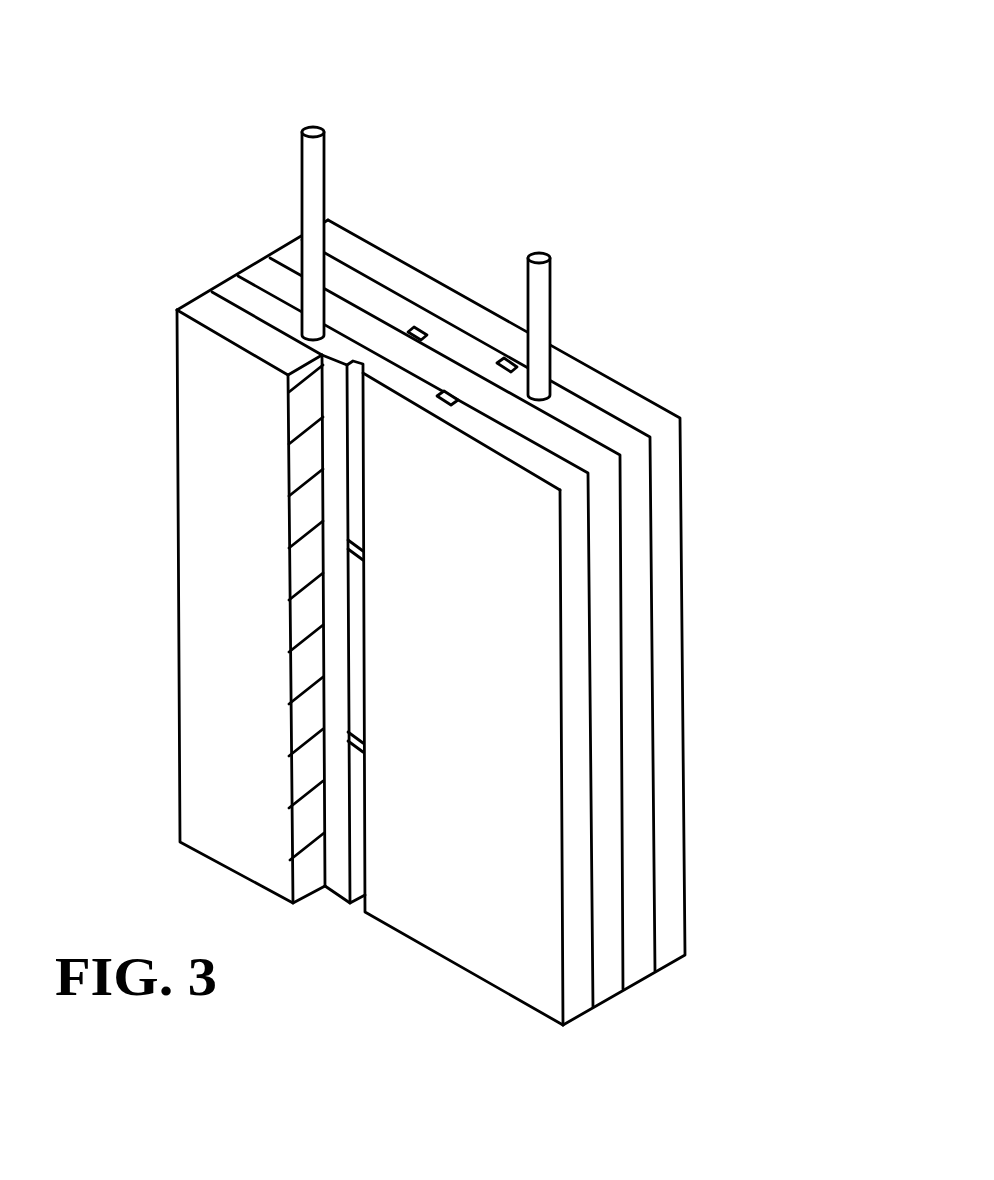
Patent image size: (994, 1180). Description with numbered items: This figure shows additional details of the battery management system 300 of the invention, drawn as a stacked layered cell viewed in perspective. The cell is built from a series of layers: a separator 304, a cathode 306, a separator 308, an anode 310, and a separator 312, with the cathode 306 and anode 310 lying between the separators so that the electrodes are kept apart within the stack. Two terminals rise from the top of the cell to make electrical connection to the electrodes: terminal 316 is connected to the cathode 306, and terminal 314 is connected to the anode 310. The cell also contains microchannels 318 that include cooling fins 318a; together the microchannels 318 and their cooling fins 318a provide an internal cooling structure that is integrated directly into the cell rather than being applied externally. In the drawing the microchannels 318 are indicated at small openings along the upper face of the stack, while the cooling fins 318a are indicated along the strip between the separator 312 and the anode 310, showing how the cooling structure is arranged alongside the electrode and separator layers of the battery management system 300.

The battery management system 300 is at (596, 120).
The separator 304 is at (673, 493).
The cathode 306 is at (637, 567).
The separator 308 is at (612, 643).
The anode 310 is at (578, 760).
The separator 312 is at (205, 623).
The terminal 314 is at (300, 159).
The terminal 316 is at (550, 297).
The microchannels 318 is at (447, 391).
The cooling fins 318a is at (363, 553).